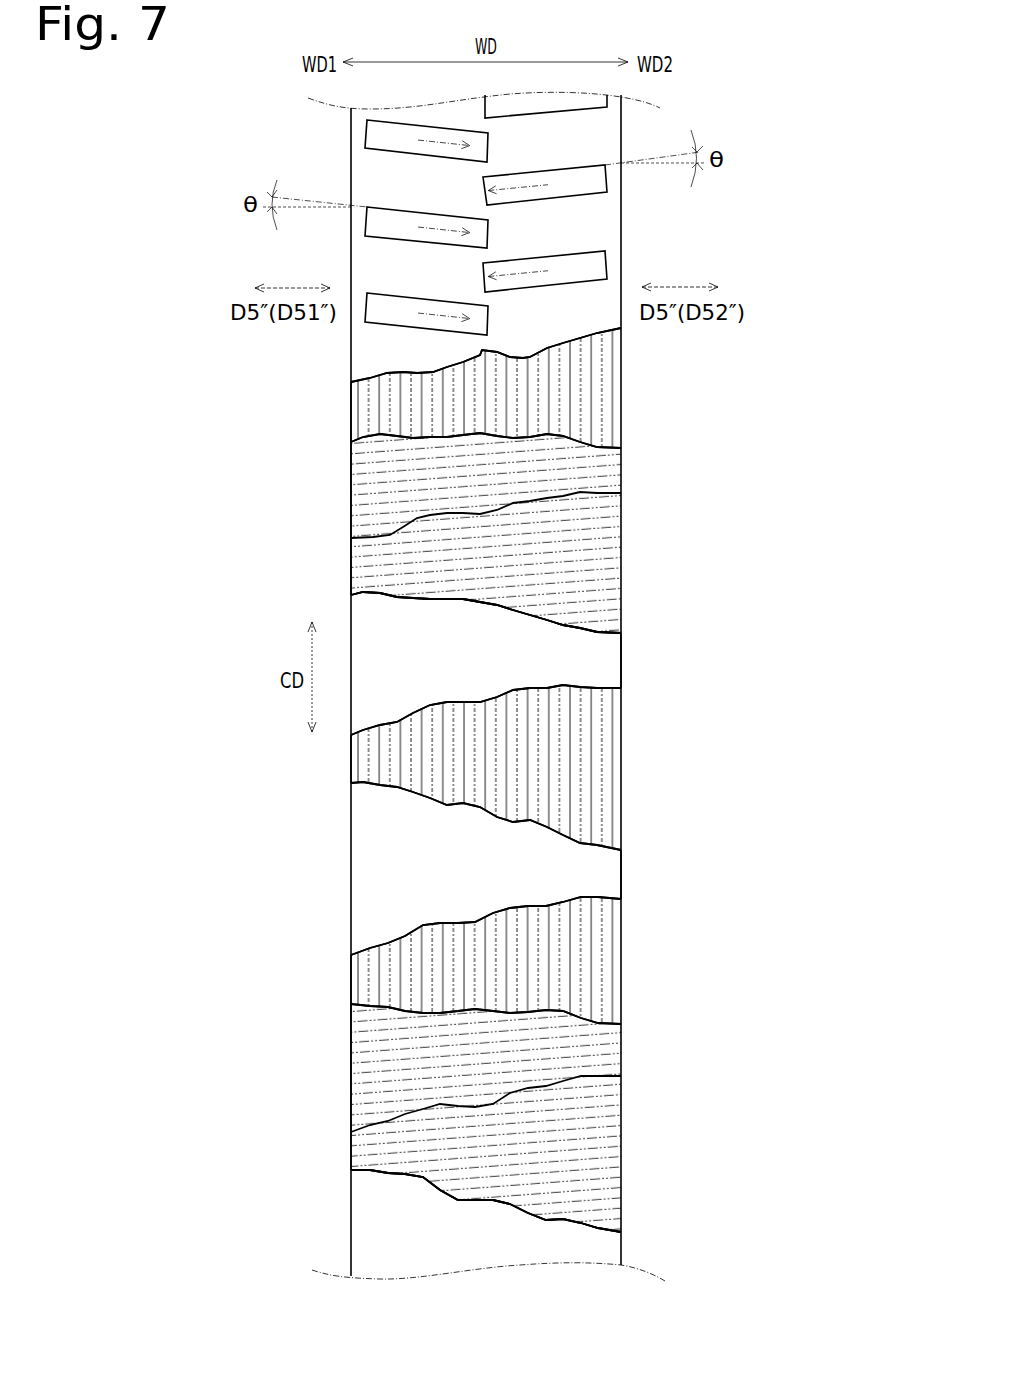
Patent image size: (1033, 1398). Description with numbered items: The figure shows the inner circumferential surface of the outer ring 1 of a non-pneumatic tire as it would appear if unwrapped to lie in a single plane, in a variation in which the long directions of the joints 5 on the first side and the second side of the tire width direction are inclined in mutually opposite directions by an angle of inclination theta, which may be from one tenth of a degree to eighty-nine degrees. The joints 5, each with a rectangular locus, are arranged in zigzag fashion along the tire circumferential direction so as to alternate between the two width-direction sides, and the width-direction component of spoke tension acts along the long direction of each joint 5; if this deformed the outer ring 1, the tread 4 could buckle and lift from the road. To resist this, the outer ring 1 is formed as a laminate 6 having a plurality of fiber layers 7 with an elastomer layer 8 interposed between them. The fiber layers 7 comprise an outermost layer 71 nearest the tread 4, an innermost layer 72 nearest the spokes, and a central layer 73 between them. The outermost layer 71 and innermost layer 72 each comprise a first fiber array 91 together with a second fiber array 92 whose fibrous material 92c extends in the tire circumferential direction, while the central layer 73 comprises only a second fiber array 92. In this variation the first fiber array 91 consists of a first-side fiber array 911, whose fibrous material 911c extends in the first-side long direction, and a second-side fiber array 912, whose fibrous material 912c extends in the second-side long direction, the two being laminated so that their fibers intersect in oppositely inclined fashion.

The outer ring 1 is at (351, 358).
The tread 4 is at (351, 1227).
The joint 5 is at (363, 147).
The laminate 6 is at (328, 853).
The fiber layers 7 is at (566, 767).
The elastomer layer 8 is at (622, 650).
The outermost layer 71 is at (762, 985).
The innermost layer 72 is at (762, 415).
The central layer 73 is at (703, 737).
The first fiber array 91 is at (706, 452).
The first-side fiber array 911 is at (622, 468).
The second-side fiber array 912 is at (622, 540).
The second fiber array 92 is at (622, 390).
The fibrous material 92c is at (358, 403).
The fibrous material 911c is at (358, 467).
The fibrous material 912c is at (360, 556).